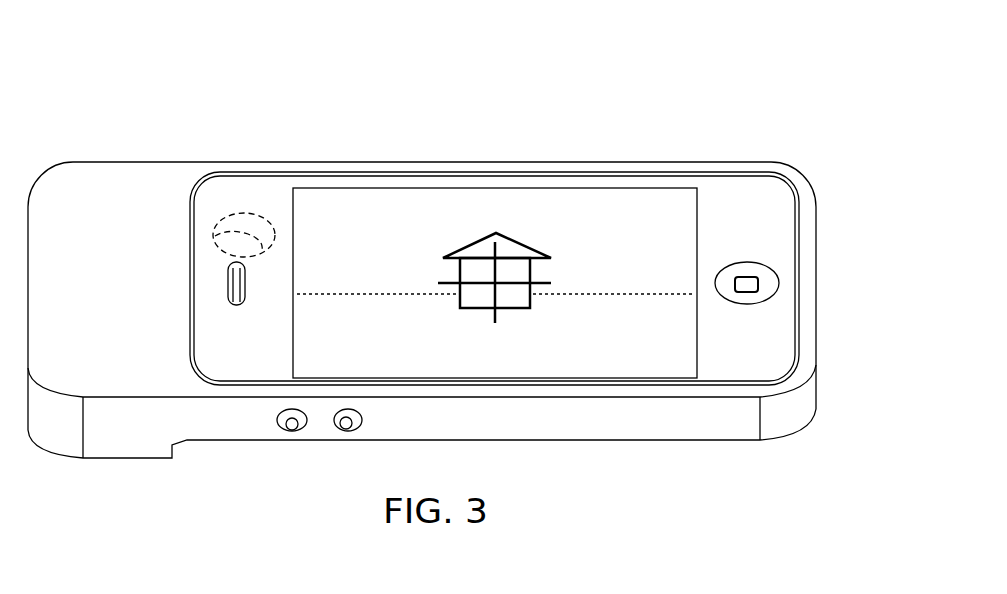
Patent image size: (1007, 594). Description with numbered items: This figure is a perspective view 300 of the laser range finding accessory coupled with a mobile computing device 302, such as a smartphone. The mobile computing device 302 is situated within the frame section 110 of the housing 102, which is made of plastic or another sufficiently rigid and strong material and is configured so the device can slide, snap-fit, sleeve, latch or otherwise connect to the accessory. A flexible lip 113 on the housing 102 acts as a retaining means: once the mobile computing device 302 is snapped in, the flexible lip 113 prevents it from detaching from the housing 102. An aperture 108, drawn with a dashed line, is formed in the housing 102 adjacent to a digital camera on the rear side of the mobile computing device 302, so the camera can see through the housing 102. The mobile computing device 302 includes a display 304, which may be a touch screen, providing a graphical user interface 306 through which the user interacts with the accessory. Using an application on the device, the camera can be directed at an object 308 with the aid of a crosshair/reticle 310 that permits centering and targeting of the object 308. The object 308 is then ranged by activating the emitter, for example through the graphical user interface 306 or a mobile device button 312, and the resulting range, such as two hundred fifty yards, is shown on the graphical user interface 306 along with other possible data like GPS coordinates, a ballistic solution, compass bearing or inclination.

The perspective view 300 is at (311, 67).
The housing 102 is at (115, 450).
The frame section 110 is at (548, 432).
The mobile computing device 302 is at (776, 323).
The flexible lip 113 is at (456, 174).
The display 304 is at (593, 205).
The graphical user interface 306 is at (443, 342).
The object 308 is at (470, 243).
The crosshair/reticle 310 is at (497, 272).
The aperture 108 is at (215, 240).
The mobile device button 312 is at (742, 275).